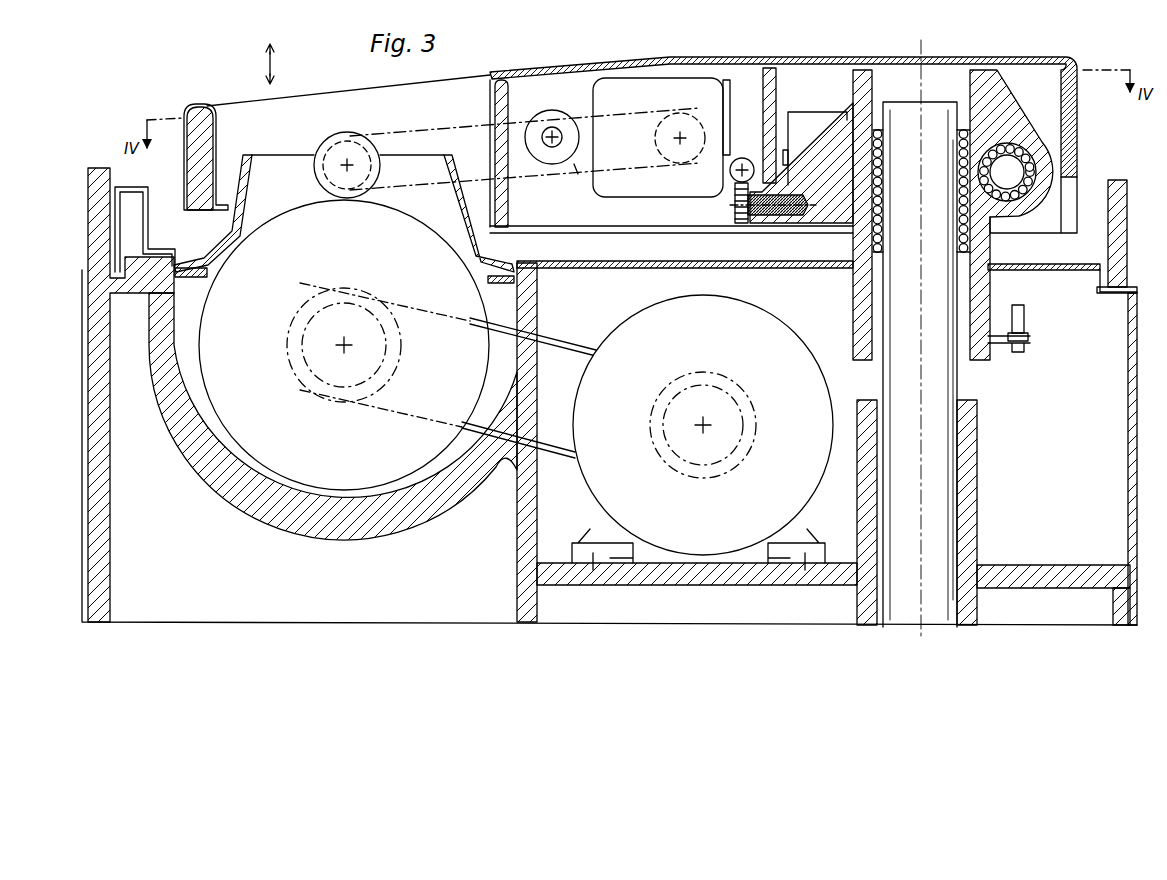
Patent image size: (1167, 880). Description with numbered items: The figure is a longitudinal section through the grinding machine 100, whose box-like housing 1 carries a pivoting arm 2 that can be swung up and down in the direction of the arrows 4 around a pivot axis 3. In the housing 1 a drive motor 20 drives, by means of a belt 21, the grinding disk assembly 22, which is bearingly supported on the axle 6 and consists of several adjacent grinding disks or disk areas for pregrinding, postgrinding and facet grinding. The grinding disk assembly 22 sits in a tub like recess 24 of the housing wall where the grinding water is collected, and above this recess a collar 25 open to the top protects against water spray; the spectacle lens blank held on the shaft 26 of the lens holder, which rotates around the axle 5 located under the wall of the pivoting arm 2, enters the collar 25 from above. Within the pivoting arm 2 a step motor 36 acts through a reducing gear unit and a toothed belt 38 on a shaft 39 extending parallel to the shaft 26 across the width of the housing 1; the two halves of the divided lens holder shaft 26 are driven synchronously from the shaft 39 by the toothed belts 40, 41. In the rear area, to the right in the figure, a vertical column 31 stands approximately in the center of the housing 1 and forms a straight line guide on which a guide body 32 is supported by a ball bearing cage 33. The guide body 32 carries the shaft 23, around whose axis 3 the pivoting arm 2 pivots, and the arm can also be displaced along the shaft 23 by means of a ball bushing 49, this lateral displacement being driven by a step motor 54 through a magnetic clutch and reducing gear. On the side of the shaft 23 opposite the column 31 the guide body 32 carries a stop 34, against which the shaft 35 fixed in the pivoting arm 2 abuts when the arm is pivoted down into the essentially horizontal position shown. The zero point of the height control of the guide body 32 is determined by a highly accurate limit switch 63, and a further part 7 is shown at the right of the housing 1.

The grinding machine 100 is at (230, 76).
The arrow 4 is at (276, 63).
The pivoting arm 2 is at (617, 62).
The housing 1 is at (104, 445).
The collar 25 is at (224, 236).
The axle 5 is at (345, 162).
The shaft of the lens holder 26 is at (356, 150).
The toothed belt 40 is at (422, 127).
The toothed belt 41 is at (424, 123).
The shaft 39 is at (556, 126).
The step motor 36 is at (628, 178).
The toothed belt 38 is at (568, 179).
The shaft 35 is at (743, 158).
The stop 34 is at (735, 210).
The step motor 54 is at (818, 122).
The ball bearing cage 33 is at (870, 227).
The guide body 32 is at (857, 322).
The column 31 is at (898, 368).
The shaft 23 is at (1014, 184).
The pivot axis 3 is at (1010, 167).
The ball bushing 49 is at (1021, 150).
The stop bar 7 is at (1125, 200).
The limit switch 63 is at (1027, 316).
The tub like recess 24 is at (203, 465).
The grinding disk assembly 22 is at (308, 458).
The axle 6 is at (343, 347).
The belt 21 is at (553, 336).
The drive motor 20 is at (754, 330).